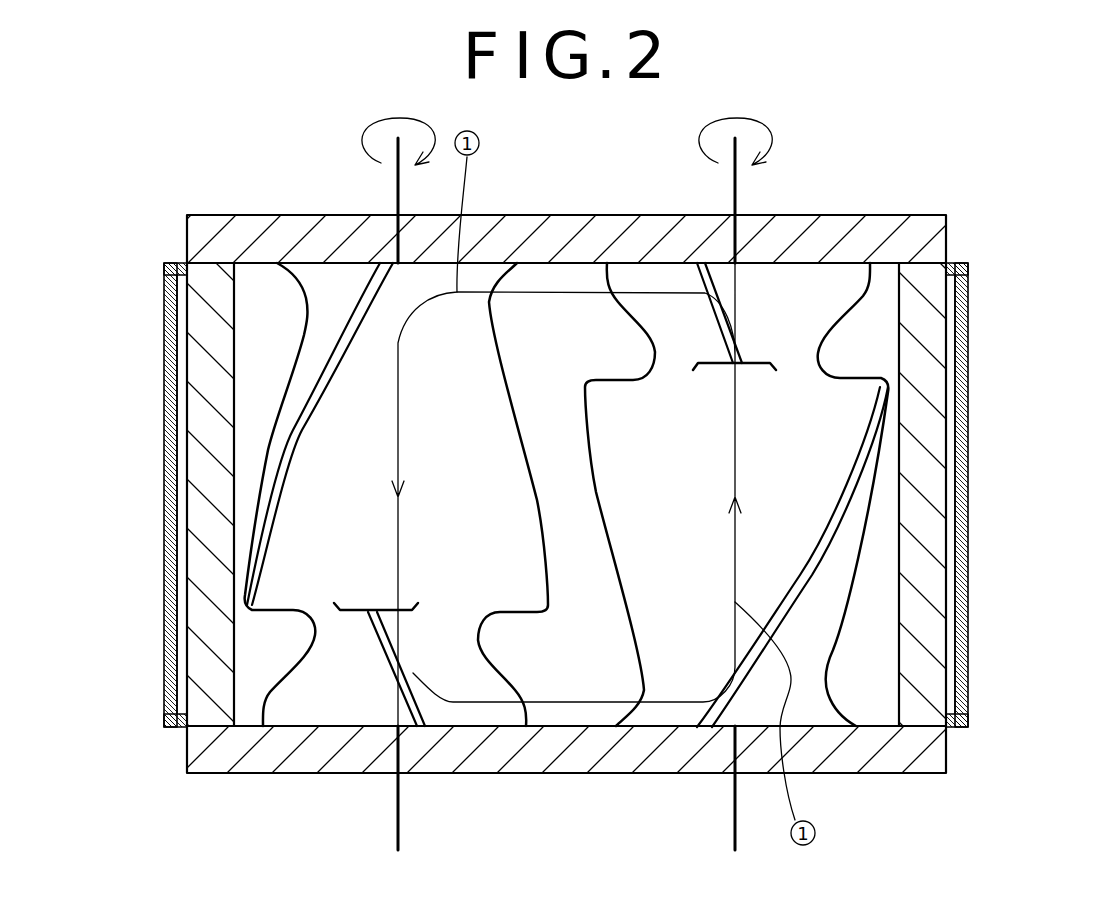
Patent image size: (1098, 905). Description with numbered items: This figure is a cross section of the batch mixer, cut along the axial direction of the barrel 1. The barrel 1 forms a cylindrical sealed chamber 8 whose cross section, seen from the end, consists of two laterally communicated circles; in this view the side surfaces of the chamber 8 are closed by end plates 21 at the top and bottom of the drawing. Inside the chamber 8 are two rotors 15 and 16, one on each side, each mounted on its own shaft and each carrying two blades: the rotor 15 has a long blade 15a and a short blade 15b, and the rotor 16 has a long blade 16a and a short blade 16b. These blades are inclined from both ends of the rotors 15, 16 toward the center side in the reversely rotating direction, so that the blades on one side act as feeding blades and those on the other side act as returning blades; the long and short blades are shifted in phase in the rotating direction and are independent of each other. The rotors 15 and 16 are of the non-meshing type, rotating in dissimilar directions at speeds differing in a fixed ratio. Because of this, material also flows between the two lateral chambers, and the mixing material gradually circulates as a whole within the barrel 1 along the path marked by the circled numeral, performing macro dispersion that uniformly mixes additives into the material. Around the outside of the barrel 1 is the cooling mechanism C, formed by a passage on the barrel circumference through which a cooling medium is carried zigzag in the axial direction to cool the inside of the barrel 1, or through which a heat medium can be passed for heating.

The barrel 1 is at (905, 310).
The chamber 8 is at (577, 483).
The rotor 15 is at (876, 570).
The long blade 15a is at (853, 491).
The short blade 15b is at (713, 289).
The rotor 16 is at (240, 509).
The long blade 16a is at (290, 433).
The short blade 16b is at (387, 647).
The end plate 21 is at (566, 214).
The cooling mechanism C is at (984, 639).